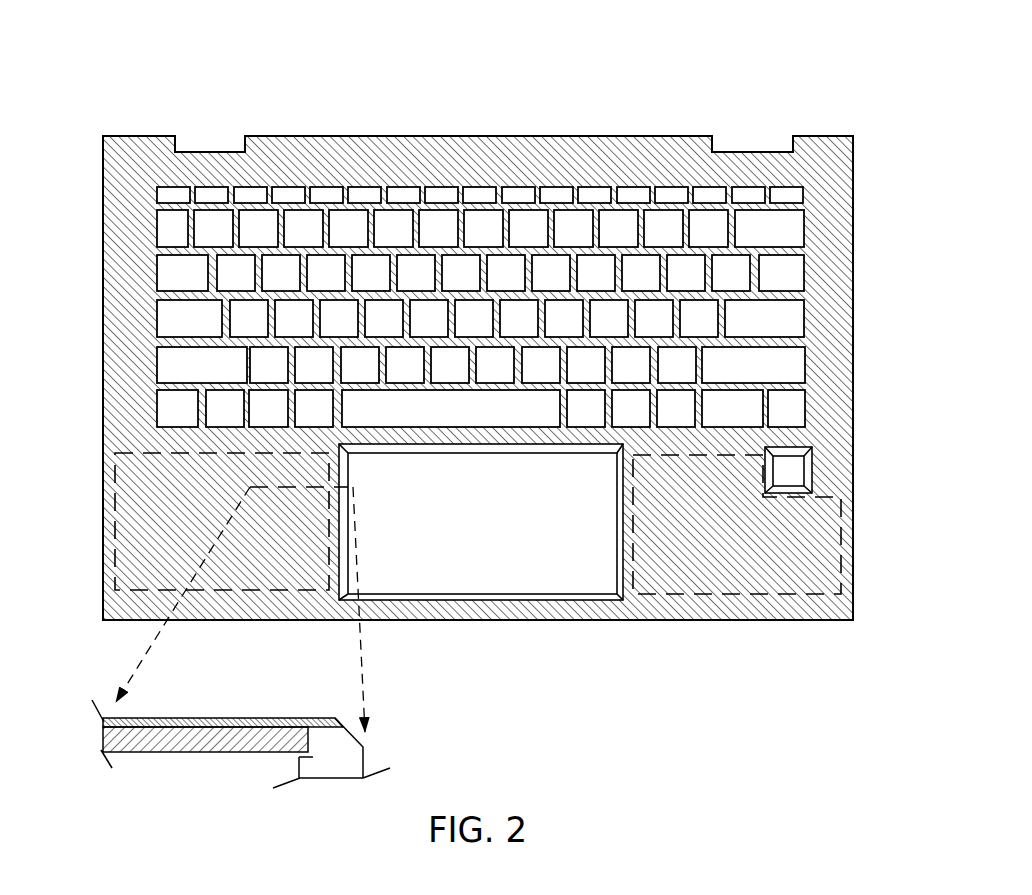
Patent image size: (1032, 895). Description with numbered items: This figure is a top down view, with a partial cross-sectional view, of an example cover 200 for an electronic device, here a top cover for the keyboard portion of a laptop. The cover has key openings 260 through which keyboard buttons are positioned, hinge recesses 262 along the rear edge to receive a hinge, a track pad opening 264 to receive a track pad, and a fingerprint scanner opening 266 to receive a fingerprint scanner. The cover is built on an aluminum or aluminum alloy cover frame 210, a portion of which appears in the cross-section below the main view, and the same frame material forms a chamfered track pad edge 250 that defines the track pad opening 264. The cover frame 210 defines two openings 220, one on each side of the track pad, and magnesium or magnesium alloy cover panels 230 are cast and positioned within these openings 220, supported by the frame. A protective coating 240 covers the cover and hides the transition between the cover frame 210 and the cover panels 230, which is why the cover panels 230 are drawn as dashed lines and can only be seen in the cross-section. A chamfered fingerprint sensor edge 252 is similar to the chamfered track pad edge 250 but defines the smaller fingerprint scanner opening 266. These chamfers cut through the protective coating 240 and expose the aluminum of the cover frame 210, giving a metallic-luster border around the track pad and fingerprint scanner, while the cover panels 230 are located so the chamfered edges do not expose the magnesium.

The cover 200 is at (190, 30).
The cover frame 210 is at (312, 760).
The openings 220 is at (144, 547).
The cover panels 230 is at (115, 495).
The protective coating 240 is at (125, 419).
The chamfered track pad edge 250 is at (348, 726).
The chamfered fingerprint sensor edge 252 is at (812, 488).
The key openings 260 is at (776, 227).
The hinge recesses 262 is at (233, 151).
The track pad opening 264 is at (520, 562).
The fingerprint scanner opening 266 is at (790, 465).